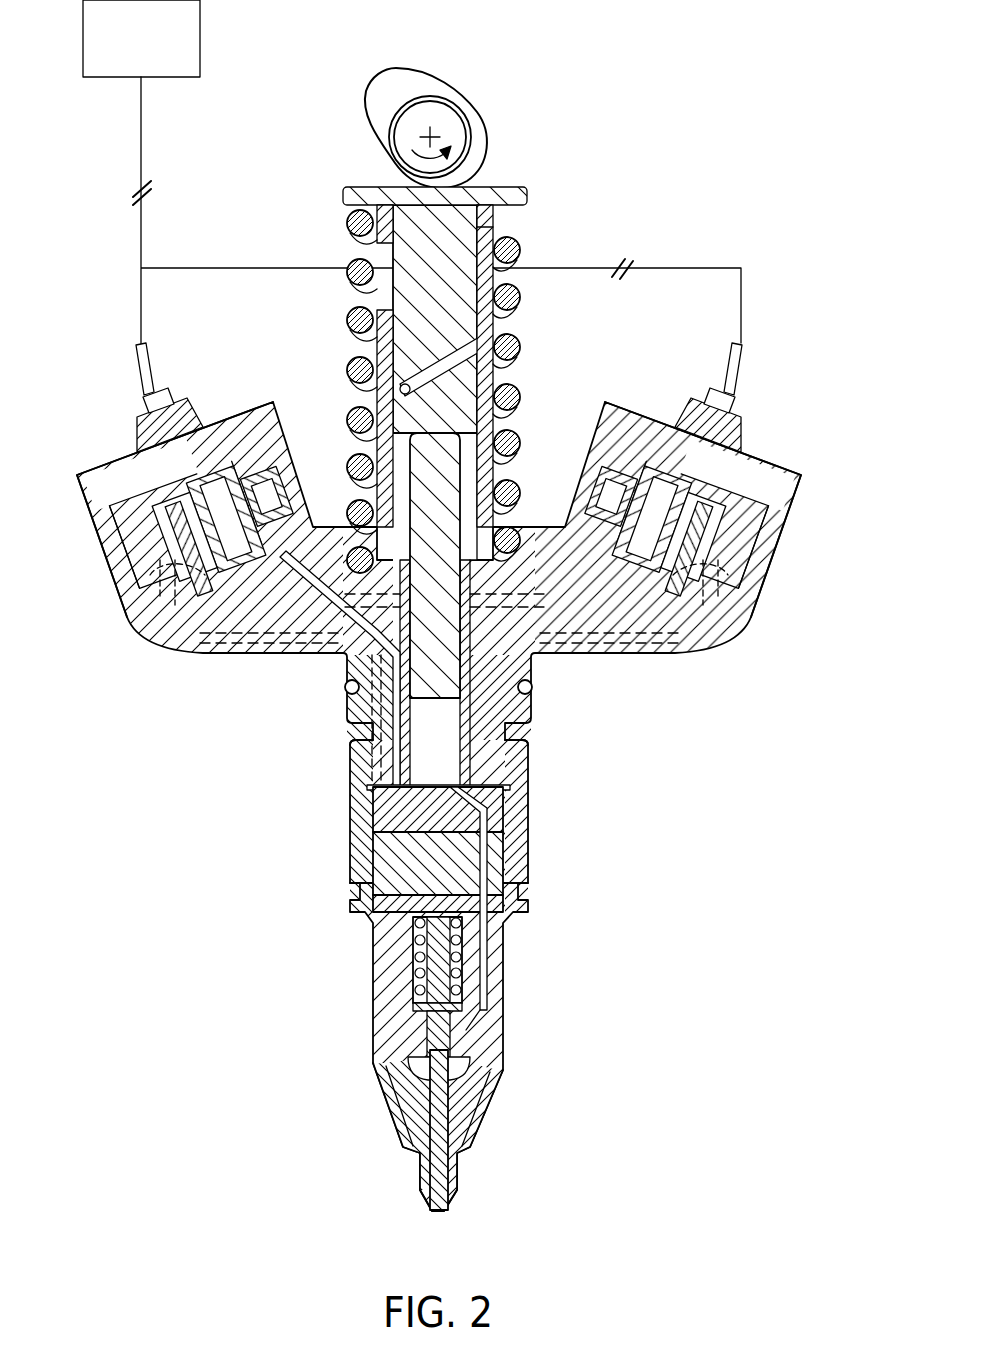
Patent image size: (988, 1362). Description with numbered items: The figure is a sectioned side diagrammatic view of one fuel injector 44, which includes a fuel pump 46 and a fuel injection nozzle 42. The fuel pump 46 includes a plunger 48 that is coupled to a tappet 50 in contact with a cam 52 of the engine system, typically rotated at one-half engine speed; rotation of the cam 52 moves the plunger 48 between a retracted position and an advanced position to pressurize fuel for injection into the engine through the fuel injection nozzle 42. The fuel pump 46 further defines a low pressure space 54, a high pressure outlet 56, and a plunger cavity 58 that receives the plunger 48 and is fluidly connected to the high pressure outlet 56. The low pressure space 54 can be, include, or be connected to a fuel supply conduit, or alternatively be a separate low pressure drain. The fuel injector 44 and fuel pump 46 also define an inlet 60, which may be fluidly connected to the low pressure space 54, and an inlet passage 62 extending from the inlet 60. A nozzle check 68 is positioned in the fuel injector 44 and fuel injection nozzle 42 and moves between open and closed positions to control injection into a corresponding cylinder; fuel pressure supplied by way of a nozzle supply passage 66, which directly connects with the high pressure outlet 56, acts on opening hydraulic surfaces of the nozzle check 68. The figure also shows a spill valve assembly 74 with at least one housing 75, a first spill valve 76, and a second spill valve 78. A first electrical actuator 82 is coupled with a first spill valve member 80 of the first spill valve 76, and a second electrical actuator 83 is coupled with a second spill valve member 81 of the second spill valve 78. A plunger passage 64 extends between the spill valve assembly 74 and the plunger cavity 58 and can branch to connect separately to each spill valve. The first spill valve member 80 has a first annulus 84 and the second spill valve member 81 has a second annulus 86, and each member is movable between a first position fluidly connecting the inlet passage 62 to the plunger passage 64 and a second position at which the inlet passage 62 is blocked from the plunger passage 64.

The fuel injection nozzle 42 is at (486, 1118).
The fuel injector 44 is at (792, 285).
The fuel pump 46 is at (540, 446).
The plunger 48 is at (416, 487).
The tappet 50 is at (500, 186).
The cam 52 is at (430, 70).
The low pressure space 54 is at (330, 780).
The high pressure outlet 56 is at (522, 762).
The plunger cavity 58 is at (528, 700).
The inlet 60 is at (366, 816).
The inlet passage 62 is at (188, 652).
The plunger passage 64 is at (350, 680).
The nozzle supply passage 66 is at (486, 985).
The nozzle check 68 is at (480, 1056).
The spill valve assembly 74 is at (88, 548).
The housing 75 is at (102, 486).
The first spill valve 76 is at (244, 482).
The second spill valve 78 is at (634, 482).
The first spill valve member 80 is at (140, 604).
The second spill valve member 81 is at (740, 592).
The first electrical actuator 82 is at (152, 462).
The second electrical actuator 83 is at (745, 470).
The first annulus 84 is at (132, 560).
The second annulus 86 is at (755, 553).